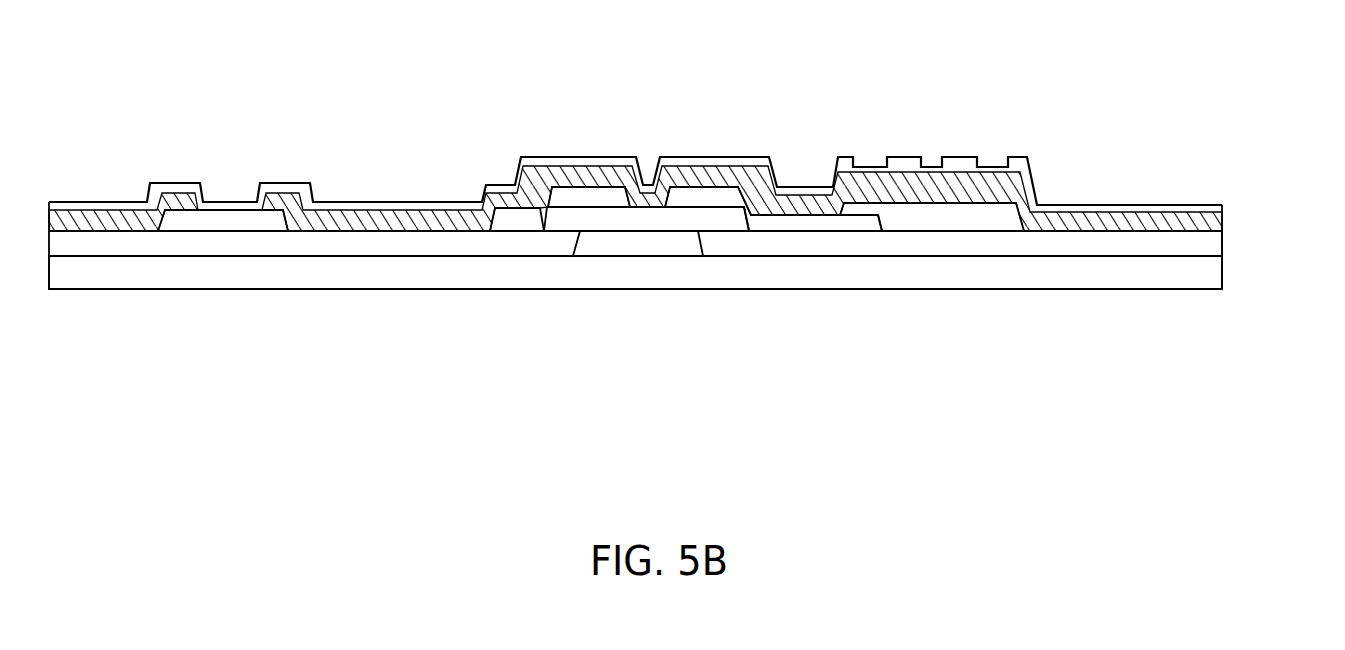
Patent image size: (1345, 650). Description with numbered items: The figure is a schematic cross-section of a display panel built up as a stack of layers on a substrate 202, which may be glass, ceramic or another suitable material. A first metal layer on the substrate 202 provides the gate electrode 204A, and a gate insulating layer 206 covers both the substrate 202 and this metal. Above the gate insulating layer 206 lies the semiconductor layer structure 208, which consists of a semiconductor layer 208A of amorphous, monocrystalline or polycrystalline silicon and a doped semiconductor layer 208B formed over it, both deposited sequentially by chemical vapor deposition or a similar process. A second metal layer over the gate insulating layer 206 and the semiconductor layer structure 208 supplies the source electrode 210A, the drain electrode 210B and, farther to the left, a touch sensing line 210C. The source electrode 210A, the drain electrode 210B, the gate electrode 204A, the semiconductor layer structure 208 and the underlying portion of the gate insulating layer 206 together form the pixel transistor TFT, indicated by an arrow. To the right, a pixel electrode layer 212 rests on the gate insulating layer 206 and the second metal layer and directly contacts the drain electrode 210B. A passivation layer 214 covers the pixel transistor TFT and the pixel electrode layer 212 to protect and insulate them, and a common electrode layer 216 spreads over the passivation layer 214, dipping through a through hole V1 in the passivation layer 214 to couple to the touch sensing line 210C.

The substrate 202 is at (1213, 270).
The gate insulating layer 206 is at (1213, 243).
The gate electrode 204A is at (643, 247).
The semiconductor layer structure 208 is at (598, 120).
The semiconductor layer 208A is at (553, 213).
The doped semiconductor layer 208B is at (597, 200).
The source electrode 210A is at (515, 218).
The drain electrode 210B is at (860, 225).
The touch sensing line 210C is at (227, 220).
The pixel electrode layer 212 is at (1000, 213).
The passivation layer 214 is at (1222, 222).
The common electrode layer 216 is at (1222, 213).
The through hole V1 is at (280, 197).
The pixel transistor TFT is at (603, 278).